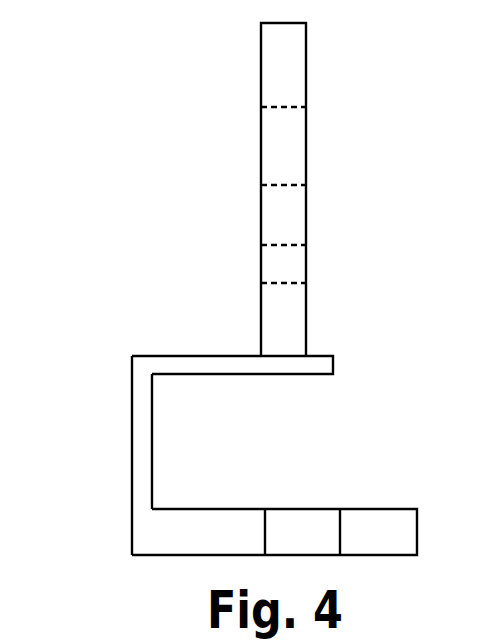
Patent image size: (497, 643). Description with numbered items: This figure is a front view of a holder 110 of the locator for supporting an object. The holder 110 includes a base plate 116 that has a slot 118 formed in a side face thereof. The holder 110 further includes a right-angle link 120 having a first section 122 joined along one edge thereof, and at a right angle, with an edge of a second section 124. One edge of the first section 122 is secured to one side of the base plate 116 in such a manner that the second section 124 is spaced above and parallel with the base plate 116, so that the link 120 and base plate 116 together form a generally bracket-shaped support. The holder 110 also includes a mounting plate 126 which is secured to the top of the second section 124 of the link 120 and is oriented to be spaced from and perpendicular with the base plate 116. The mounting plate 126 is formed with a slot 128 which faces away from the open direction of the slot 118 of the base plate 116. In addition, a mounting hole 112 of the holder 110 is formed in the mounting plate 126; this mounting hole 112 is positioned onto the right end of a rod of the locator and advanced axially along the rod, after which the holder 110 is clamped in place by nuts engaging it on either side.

The holder 110 is at (176, 103).
The mounting hole 112 is at (277, 246).
The base plate 116 is at (395, 533).
The slot 118 is at (338, 535).
The right-angle link 120 is at (122, 389).
The first section 122 is at (140, 482).
The second section 124 is at (238, 368).
The mounting plate 126 is at (292, 67).
The slot 128 is at (275, 110).